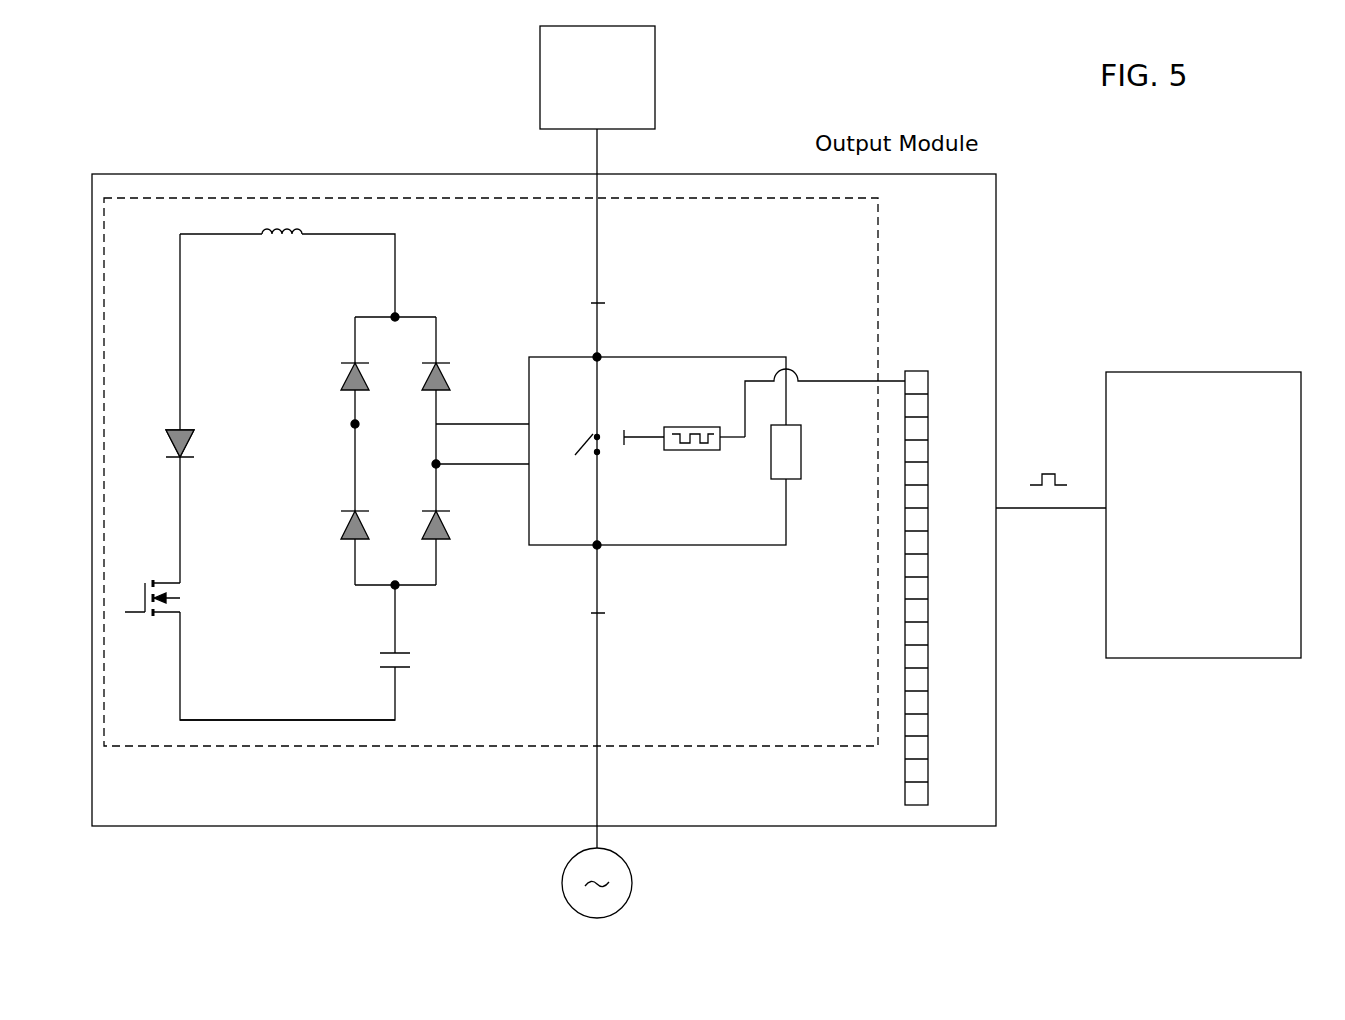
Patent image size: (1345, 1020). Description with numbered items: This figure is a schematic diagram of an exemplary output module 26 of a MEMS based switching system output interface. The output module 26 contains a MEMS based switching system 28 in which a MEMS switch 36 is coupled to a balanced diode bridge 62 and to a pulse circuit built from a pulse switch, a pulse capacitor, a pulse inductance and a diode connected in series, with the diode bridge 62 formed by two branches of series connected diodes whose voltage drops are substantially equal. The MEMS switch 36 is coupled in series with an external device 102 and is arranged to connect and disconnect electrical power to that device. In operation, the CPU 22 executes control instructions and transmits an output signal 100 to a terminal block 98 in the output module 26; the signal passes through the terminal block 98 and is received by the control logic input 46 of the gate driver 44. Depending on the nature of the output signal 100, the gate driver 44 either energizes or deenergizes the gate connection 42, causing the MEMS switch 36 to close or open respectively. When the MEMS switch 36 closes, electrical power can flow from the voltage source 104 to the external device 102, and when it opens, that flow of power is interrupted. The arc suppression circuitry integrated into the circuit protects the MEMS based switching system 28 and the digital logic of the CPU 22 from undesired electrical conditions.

The CPU 22 is at (1212, 372).
The output module 26 is at (372, 174).
The MEMS based switching system 28 is at (878, 260).
The MEMS switch 36 is at (562, 437).
The gate connection 42 is at (643, 432).
The gate driver 44 is at (681, 450).
The control logic input 46 is at (745, 418).
The balanced diode bridge 62 is at (412, 302).
The terminal block 98 is at (910, 370).
The output signal 100 is at (1036, 482).
The external device 102 is at (655, 101).
The voltage source 104 is at (632, 889).